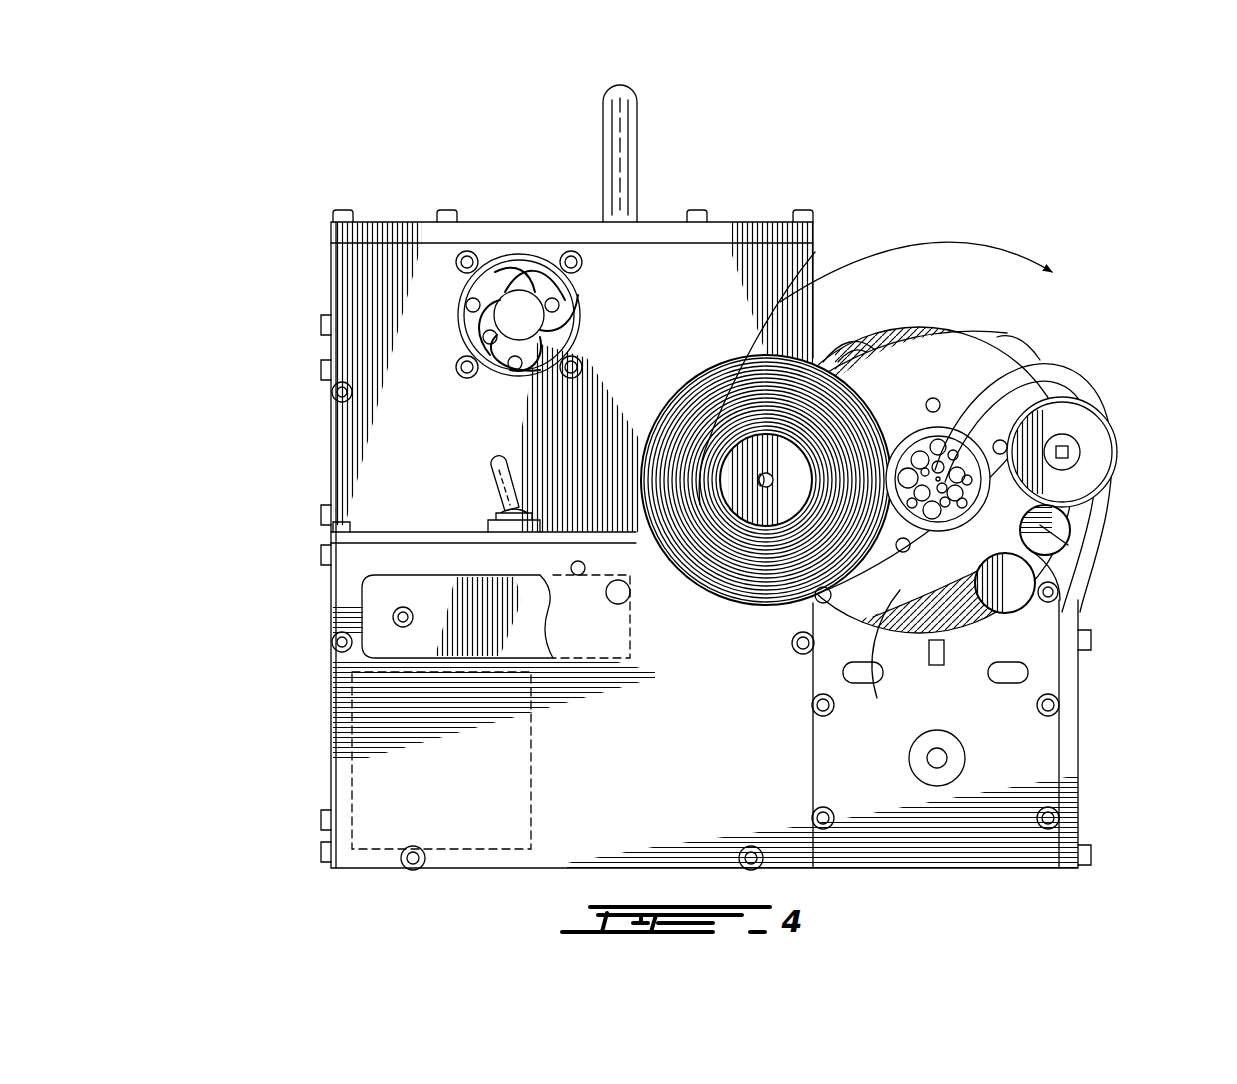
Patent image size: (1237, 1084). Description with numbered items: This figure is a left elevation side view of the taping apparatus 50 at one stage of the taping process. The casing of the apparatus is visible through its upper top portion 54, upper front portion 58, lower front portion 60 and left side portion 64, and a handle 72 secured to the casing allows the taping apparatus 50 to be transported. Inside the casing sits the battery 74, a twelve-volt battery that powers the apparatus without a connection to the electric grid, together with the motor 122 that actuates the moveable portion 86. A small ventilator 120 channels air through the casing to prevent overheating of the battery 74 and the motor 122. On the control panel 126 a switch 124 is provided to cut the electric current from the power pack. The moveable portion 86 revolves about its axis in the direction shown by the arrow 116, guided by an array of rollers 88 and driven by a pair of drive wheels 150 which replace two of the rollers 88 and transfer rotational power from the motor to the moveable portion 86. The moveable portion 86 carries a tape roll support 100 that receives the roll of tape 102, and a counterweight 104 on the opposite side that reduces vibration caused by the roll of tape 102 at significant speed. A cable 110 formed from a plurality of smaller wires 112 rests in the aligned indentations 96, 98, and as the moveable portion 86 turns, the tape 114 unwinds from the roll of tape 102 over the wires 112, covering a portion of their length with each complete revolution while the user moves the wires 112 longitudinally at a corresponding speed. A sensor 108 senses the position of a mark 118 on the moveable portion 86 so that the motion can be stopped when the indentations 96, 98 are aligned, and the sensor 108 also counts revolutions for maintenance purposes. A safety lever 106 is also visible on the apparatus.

The taping apparatus 50 is at (272, 192).
The upper top portion 54 is at (531, 222).
The upper front portion 58 is at (815, 252).
The lower front portion 60 is at (1082, 712).
The left side portion 64 is at (418, 428).
The handle 72 is at (622, 108).
The battery 74 is at (392, 778).
The moveable portion 86 is at (983, 353).
The rollers 88 is at (1040, 560).
The indentation 96 is at (886, 323).
The indentation 98 is at (1072, 560).
The tape roll support 100 is at (745, 510).
The roll of tape 102 is at (760, 582).
The counterweight 104 is at (1095, 445).
The safety lever 106 is at (540, 626).
The sensor 108 is at (940, 663).
The cable 110 is at (968, 466).
The wires 112 is at (943, 452).
The tape 114 is at (857, 661).
The arrow 116 is at (968, 240).
The mark 118 is at (840, 350).
The ventilator 120 is at (519, 313).
The motor 122 is at (1002, 789).
The switch 124 is at (507, 468).
The control panel 126 is at (415, 522).
The drive wheels 150 is at (1013, 587).